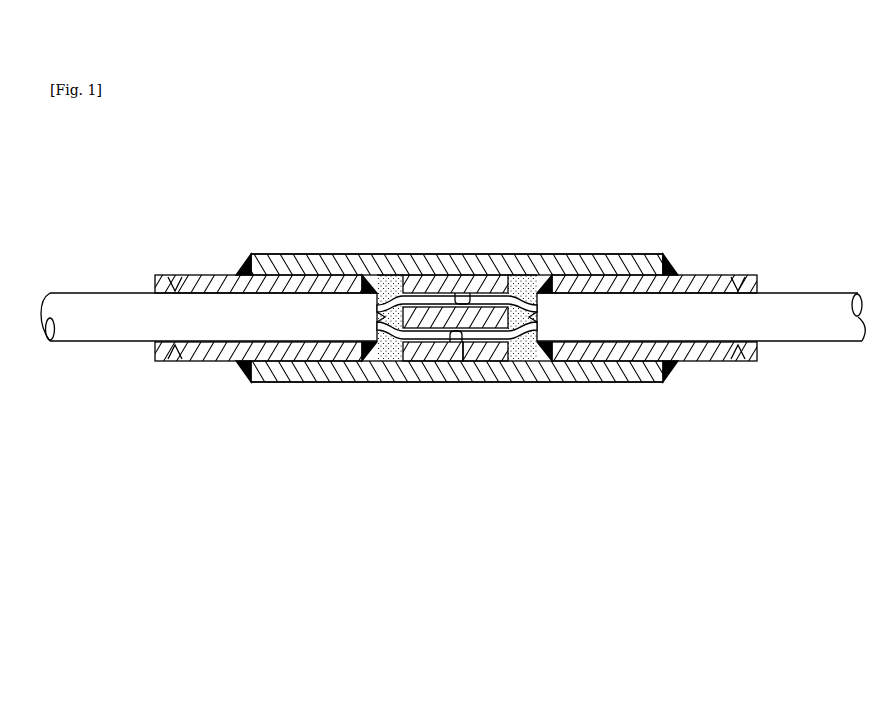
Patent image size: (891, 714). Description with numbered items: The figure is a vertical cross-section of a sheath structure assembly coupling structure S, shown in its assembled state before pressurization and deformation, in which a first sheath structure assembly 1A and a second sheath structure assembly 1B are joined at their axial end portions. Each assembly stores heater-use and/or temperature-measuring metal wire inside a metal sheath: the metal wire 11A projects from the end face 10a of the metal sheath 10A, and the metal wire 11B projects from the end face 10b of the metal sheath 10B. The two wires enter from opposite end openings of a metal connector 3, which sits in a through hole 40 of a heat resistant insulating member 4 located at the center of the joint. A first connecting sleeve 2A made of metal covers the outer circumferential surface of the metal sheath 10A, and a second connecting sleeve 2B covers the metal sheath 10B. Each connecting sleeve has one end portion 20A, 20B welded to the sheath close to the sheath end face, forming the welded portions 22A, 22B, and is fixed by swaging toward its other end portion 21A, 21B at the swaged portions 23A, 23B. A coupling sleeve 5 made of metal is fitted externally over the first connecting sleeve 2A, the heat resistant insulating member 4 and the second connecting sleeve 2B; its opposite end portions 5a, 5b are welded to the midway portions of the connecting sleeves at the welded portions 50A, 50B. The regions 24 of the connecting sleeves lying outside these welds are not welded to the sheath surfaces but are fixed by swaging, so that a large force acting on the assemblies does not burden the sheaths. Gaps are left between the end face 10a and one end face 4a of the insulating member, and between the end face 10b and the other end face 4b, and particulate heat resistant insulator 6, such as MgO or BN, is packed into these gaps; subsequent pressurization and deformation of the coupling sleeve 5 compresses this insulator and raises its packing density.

The first sheath structure assembly 1A is at (83, 291).
The metal sheath 10A is at (117, 292).
The second sheath structure assembly 1B is at (840, 293).
The metal sheath 10B is at (802, 293).
The first connecting sleeve 2A is at (203, 274).
The second connecting sleeve 2B is at (573, 272).
The coupling sleeve 5 is at (371, 252).
The end portion of coupling sleeve 5a is at (252, 255).
The end portion of coupling sleeve 5b is at (662, 254).
The other end portion of first connecting sleeve 21A is at (155, 275).
The other end portion of second connecting sleeve 21B is at (757, 273).
The region 24 is at (697, 275).
The swaged portion 23A is at (175, 360).
The swaged portion 23B is at (738, 276).
The welded portion 50A is at (245, 268).
The welded portion 50B is at (673, 370).
The one end portion of first connecting sleeve 20A is at (365, 280).
The one end portion of second connecting sleeve 20B is at (543, 276).
The welded portion 22A is at (372, 360).
The welded portion 22B is at (543, 358).
The heat resistant insulator 6 is at (388, 355).
The heat resistant insulating member 4 is at (450, 287).
The connector 3 is at (495, 310).
The one end face of heat resistant insulating member 4a is at (400, 358).
The other end face of heat resistant insulating member 4b is at (510, 355).
The metal wire 11A is at (393, 298).
The metal wire 11B is at (528, 307).
The end face of metal sheath 10a is at (383, 302).
The end face of metal sheath 10b is at (538, 350).
The through hole 40 is at (463, 298).
The sheath structure assembly coupling structure S is at (643, 192).